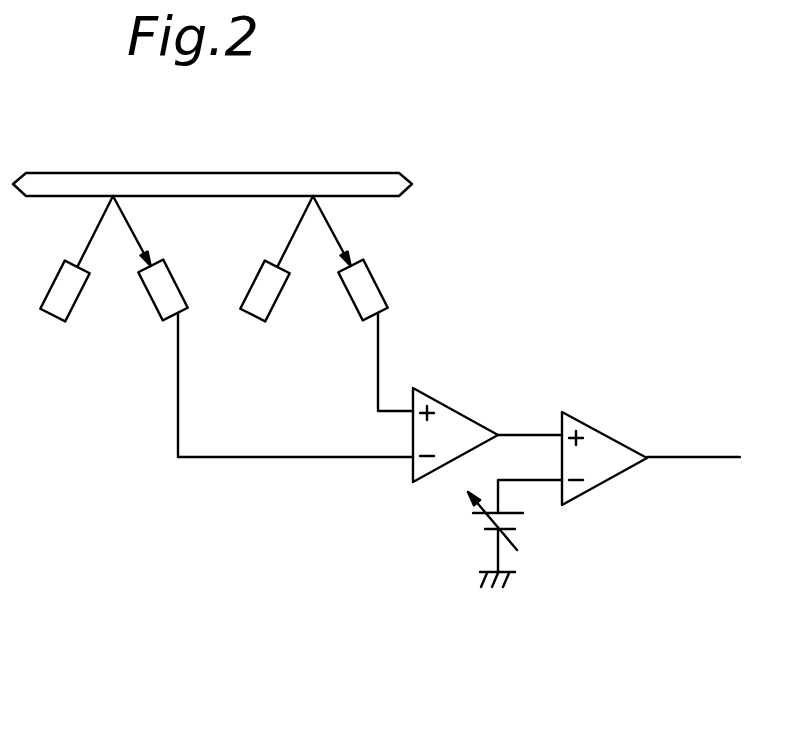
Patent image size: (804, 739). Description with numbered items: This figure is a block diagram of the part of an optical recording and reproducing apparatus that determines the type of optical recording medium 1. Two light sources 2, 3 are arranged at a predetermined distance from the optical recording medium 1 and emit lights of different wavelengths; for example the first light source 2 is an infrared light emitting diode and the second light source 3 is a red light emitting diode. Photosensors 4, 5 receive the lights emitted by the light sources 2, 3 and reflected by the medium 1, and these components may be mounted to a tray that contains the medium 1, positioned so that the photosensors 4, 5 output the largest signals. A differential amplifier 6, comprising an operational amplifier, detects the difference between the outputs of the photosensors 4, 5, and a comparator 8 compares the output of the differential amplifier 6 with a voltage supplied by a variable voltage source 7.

The optical recording medium 1 is at (350, 173).
The first light source 2 is at (72, 302).
The second light source 3 is at (272, 302).
The photosensor 4 is at (148, 300).
The photosensor 5 is at (348, 300).
The differential amplifier 6 is at (460, 412).
The variable voltage source 7 is at (478, 520).
The comparator 8 is at (610, 438).